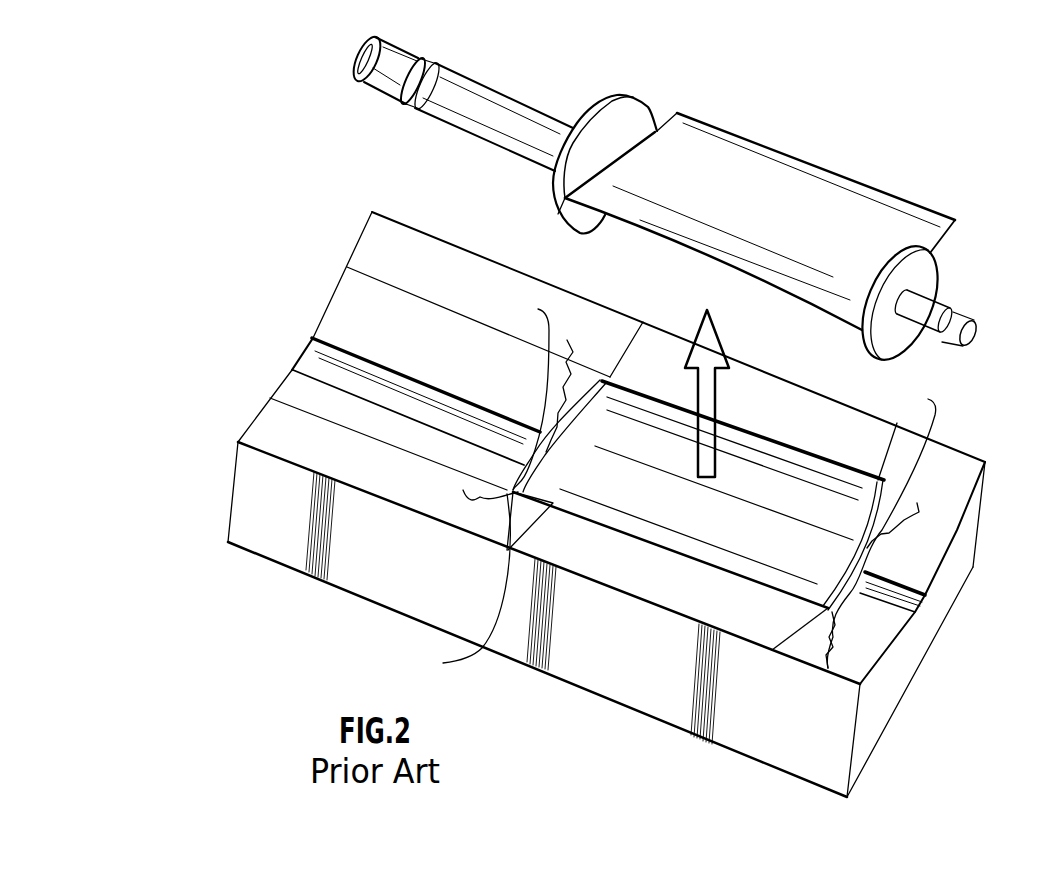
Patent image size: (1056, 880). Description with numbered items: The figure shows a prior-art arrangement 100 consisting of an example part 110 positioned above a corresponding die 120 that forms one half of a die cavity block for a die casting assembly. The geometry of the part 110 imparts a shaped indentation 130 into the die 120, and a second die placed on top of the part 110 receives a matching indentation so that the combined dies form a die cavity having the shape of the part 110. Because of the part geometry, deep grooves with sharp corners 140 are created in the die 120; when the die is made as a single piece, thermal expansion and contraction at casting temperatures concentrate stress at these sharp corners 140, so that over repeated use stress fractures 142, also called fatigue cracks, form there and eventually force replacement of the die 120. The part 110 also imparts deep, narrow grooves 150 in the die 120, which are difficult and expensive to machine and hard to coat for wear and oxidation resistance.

The prior art roller and anvil assembly 100 is at (202, 178).
The part 110 is at (822, 195).
The die 120 is at (262, 432).
The shaped indentation 130 is at (333, 370).
The sharp corners 140 is at (930, 681).
The stress fractures 142 is at (577, 372).
The deep, narrow grooves 150 is at (868, 547).